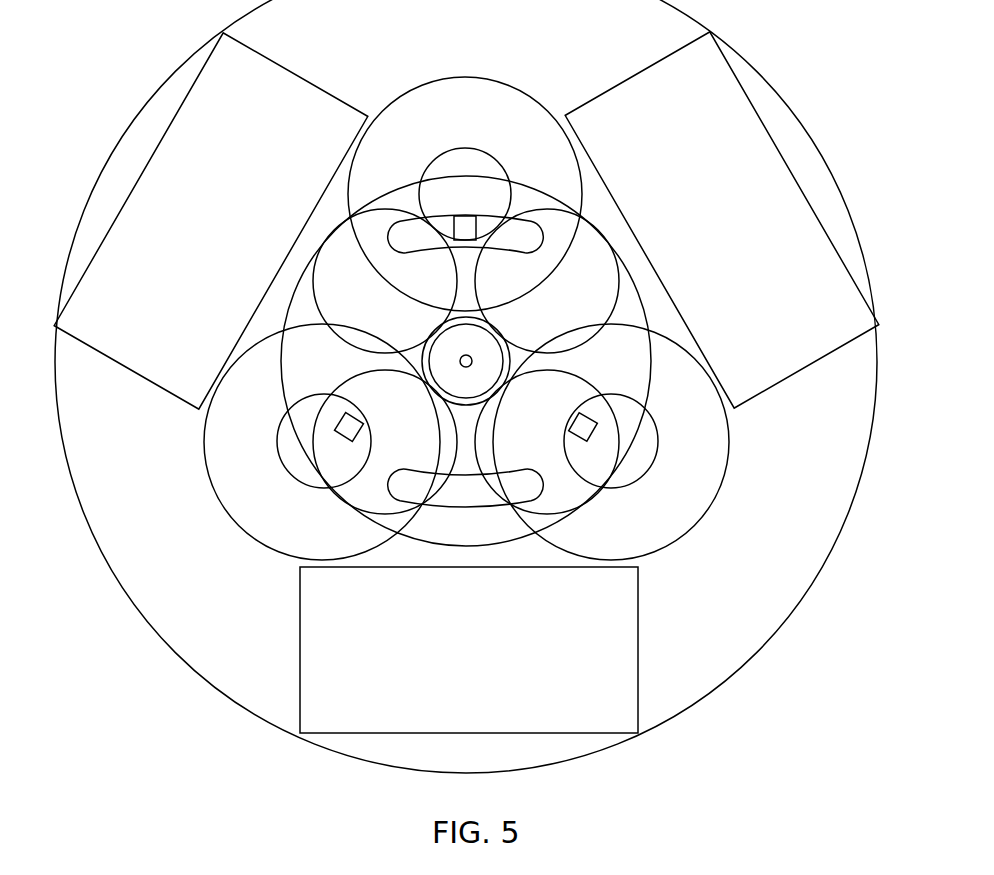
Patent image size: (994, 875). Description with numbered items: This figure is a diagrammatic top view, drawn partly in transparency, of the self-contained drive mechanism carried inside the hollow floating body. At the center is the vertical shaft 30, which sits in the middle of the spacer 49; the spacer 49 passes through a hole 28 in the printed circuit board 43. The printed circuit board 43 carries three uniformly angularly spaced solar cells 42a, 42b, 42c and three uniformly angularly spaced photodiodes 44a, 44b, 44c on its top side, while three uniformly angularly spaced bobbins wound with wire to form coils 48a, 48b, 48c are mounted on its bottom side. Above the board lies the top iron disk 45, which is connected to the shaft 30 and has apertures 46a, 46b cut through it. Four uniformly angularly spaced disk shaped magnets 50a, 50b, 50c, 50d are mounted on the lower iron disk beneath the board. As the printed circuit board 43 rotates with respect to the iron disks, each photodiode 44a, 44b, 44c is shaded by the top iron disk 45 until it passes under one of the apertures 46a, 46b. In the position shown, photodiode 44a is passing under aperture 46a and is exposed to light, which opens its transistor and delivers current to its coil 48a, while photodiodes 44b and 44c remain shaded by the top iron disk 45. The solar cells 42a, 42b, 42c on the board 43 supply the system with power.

The hole 28 is at (418, 348).
The vertical shaft 30 is at (470, 357).
The solar cell 42a is at (640, 592).
The solar cell 42b is at (318, 86).
The solar cell 42c is at (790, 378).
The printed circuit board 43 is at (822, 156).
The photodiode 44a is at (478, 252).
The photodiode 44b is at (358, 420).
The photodiode 44c is at (572, 420).
The top iron disk 45 is at (421, 546).
The aperture 46a is at (612, 245).
The aperture 46b is at (468, 508).
The coil 48a is at (497, 81).
The coil 48b is at (296, 556).
The coil 48c is at (729, 455).
The spacer 49 is at (449, 344).
The disk shaped magnet 50a is at (313, 282).
The disk shaped magnet 50b is at (637, 283).
The disk shaped magnet 50c is at (572, 378).
The disk shaped magnet 50d is at (347, 382).